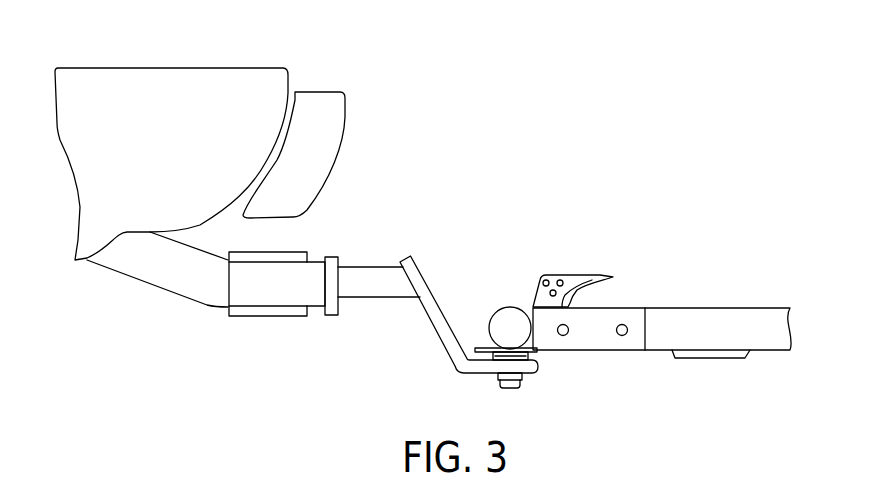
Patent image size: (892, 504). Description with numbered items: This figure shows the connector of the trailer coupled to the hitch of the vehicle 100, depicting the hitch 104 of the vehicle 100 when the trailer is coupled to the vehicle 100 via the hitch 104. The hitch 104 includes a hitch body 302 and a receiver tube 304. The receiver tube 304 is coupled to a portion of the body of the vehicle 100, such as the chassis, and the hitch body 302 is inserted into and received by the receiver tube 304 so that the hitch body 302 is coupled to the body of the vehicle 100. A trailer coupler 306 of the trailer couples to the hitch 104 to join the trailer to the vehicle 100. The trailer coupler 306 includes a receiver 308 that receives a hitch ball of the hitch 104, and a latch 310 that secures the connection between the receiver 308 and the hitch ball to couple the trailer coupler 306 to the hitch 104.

The vehicle 100 is at (186, 46).
The hitch 104 is at (350, 369).
The hitch body 302 is at (427, 270).
The receiver tube 304 is at (314, 268).
The trailer coupler 306 is at (593, 223).
The receiver 308 is at (507, 305).
The latch 310 is at (602, 277).